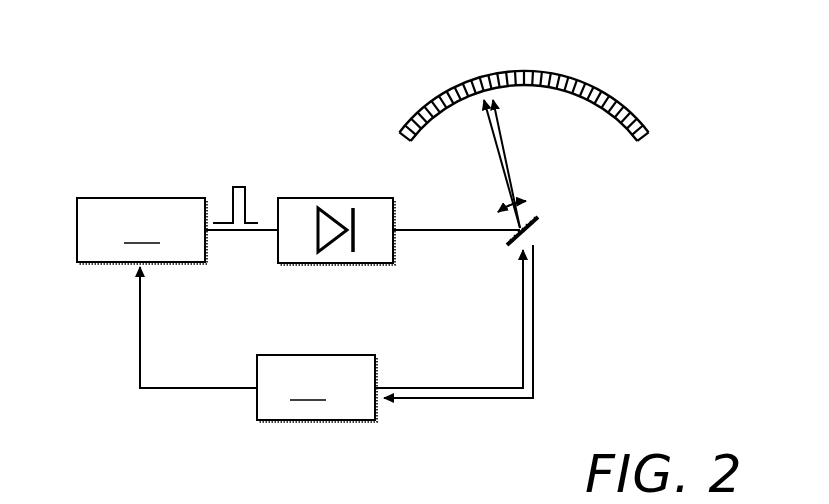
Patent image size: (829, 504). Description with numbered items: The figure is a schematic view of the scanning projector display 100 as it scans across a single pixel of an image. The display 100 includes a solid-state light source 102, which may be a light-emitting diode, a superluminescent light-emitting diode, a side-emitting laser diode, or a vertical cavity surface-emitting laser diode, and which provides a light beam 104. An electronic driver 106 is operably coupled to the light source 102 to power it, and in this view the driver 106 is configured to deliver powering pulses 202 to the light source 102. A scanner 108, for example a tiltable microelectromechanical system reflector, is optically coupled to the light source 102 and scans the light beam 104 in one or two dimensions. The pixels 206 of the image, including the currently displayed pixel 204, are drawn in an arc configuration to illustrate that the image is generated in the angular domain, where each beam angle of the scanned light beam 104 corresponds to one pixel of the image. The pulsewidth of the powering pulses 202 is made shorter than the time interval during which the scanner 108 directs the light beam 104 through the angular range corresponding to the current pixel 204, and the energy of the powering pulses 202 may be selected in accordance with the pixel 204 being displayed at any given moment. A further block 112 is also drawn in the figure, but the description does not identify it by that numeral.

The scanning projector display 100 is at (118, 99).
The solid-state light source 102 is at (308, 198).
The light beam 104 is at (528, 182).
The electronic driver 106 is at (142, 231).
The scanner 108 is at (571, 234).
The feedback / detection unit 112 is at (317, 388).
The powering pulses 202 is at (237, 187).
The current pixel 204 is at (483, 77).
The pixels 206 is at (636, 81).